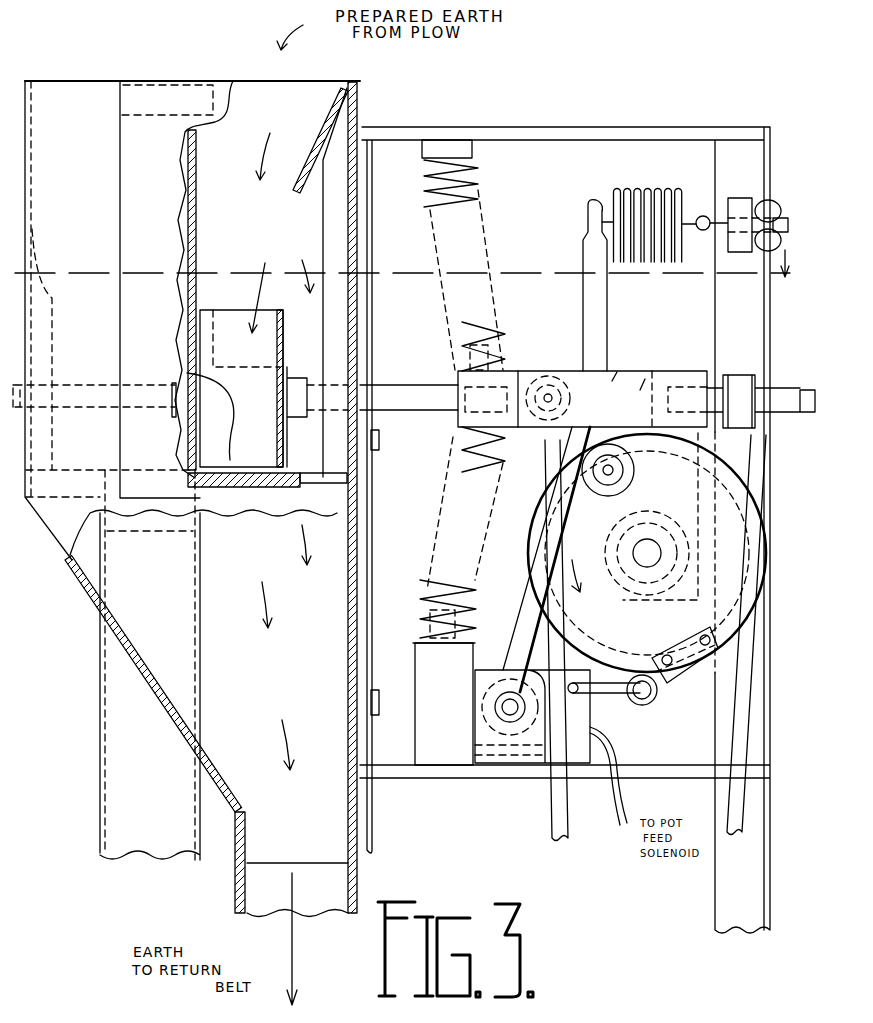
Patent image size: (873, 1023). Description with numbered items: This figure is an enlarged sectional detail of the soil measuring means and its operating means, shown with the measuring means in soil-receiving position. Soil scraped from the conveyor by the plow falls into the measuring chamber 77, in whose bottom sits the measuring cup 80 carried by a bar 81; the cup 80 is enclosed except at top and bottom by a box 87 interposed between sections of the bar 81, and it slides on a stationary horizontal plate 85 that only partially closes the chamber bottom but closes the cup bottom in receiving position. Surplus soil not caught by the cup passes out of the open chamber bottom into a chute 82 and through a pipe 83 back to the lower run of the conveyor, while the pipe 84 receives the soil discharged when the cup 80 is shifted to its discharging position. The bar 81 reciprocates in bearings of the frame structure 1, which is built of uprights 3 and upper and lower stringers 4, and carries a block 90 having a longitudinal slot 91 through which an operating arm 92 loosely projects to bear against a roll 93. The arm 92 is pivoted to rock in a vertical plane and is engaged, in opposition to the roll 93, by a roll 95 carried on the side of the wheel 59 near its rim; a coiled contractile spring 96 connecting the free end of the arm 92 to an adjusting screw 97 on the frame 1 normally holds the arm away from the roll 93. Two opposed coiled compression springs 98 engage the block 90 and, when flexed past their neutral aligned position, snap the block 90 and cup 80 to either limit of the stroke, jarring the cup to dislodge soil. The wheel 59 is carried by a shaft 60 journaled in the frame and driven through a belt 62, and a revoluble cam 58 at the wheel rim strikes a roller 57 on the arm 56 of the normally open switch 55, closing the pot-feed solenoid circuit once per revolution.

The frame structure 1 is at (790, 758).
The uprights 3 is at (745, 897).
The stringers 4 is at (795, 276).
The normally open switch 55 is at (573, 742).
The arm 56 is at (598, 694).
The roller 57 is at (645, 706).
The revoluble cam 58 is at (672, 680).
The wheel 59 is at (750, 522).
The shaft 60 is at (643, 567).
The belt 62 is at (568, 828).
The measuring chamber 77 is at (236, 82).
The measuring cup 80 is at (188, 375).
The bar 81 is at (423, 373).
The chute 82 is at (292, 682).
The pipe 83 is at (357, 870).
The pipe 84 is at (168, 636).
The stationary horizontal plate 85 is at (253, 487).
The box 87 is at (185, 438).
The block 90 is at (632, 362).
The longitudinal slot 91 is at (650, 378).
The operating arm 92 is at (592, 330).
The roll 93 is at (526, 430).
The roll 95 is at (637, 470).
The coiled contractile spring 96 is at (670, 186).
The adjusting screw 97 is at (707, 240).
The coiled compression springs 98 is at (500, 330).